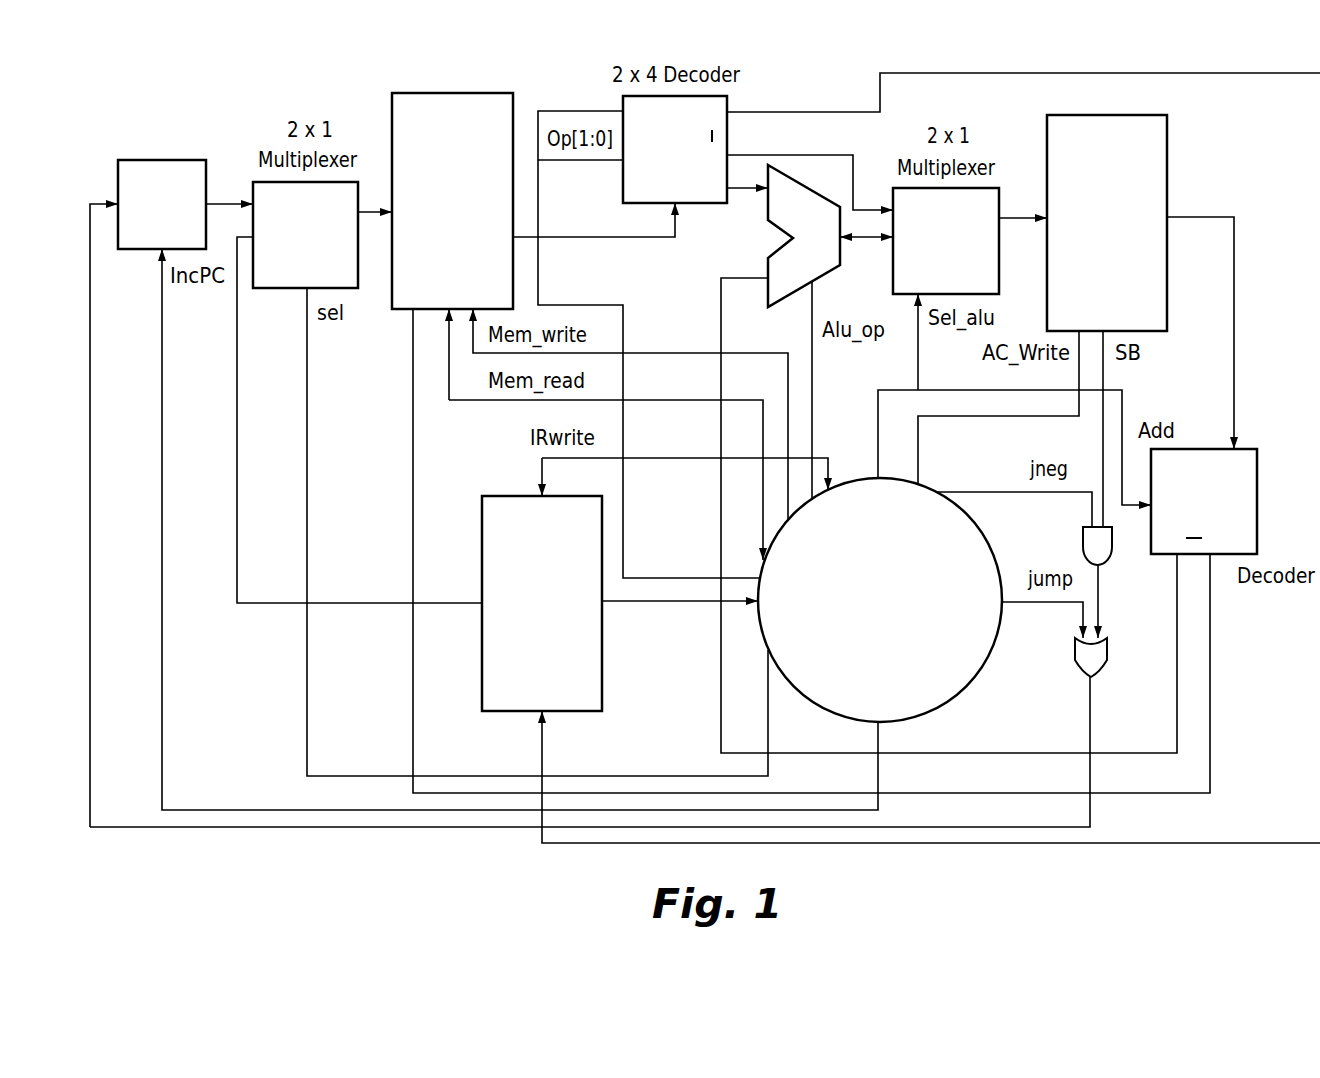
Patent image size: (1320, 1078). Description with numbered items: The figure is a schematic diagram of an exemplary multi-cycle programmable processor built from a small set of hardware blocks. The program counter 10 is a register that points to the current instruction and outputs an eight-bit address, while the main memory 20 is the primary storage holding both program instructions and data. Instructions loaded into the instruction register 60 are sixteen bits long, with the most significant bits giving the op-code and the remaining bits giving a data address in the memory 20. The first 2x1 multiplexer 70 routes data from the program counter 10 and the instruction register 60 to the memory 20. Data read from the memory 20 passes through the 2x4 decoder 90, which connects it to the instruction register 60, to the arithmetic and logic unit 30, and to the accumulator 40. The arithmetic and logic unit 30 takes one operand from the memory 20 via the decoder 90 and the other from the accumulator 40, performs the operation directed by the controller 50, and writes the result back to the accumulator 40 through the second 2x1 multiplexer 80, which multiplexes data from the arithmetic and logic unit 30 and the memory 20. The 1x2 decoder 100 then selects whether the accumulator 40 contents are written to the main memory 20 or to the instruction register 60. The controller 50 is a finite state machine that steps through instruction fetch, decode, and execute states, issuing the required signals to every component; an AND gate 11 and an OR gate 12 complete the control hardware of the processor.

The program counter 10 is at (143, 160).
The main memory 20 is at (405, 93).
The arithmetic and logic unit 30 is at (768, 253).
The accumulator 40 is at (1167, 127).
The controller 50 is at (965, 685).
The instruction register 60 is at (482, 682).
The 2x1 multiplexer 70 is at (358, 290).
The 2x1 multiplexer 80 is at (1000, 188).
The 2x4 decoder 90 is at (620, 96).
The 1x2 decoder 100 is at (1257, 449).
The AND gate 11 is at (1112, 553).
The OR gate 12 is at (1107, 666).